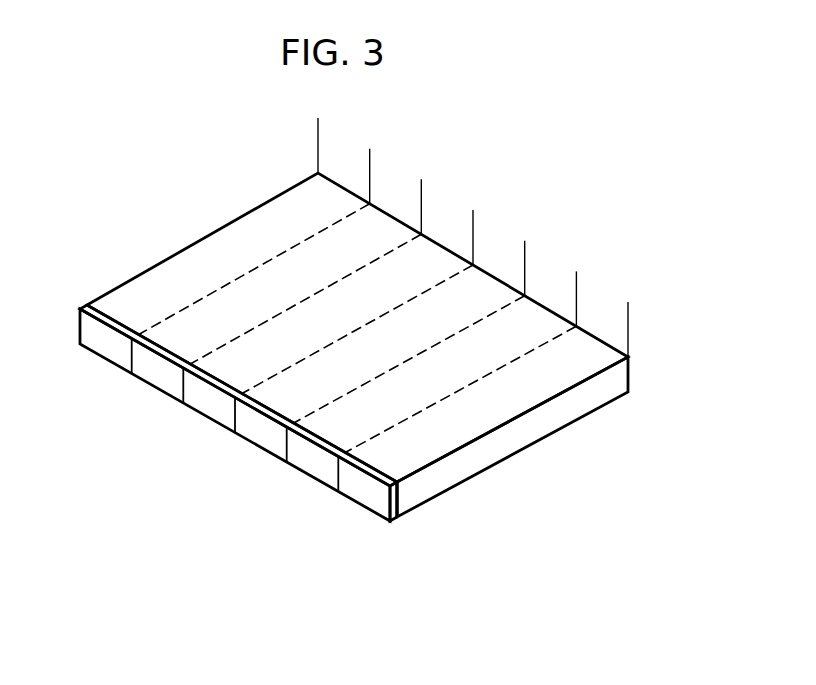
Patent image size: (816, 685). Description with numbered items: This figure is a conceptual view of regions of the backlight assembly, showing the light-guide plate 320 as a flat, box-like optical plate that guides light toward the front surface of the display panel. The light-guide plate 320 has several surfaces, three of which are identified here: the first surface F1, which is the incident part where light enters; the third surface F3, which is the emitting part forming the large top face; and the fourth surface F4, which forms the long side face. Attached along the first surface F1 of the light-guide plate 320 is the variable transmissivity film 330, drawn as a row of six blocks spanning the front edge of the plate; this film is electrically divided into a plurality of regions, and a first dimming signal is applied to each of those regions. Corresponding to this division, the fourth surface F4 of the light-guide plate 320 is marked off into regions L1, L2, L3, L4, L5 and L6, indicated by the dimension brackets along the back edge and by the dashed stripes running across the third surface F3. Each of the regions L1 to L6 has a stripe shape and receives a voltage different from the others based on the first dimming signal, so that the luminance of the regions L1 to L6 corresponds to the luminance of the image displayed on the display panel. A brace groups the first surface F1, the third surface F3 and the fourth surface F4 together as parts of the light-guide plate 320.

The light-guide plate 320 is at (357, 365).
The variable transmissivity film 330 is at (311, 467).
The first surface F1 is at (438, 517).
The third surface F3 is at (467, 421).
The fourth surface F4 is at (468, 482).
The region L1 is at (370, 159).
The region L2 is at (421, 189).
The region L3 is at (473, 220).
The region L4 is at (525, 251).
The region L5 is at (576, 281).
The region L6 is at (628, 312).